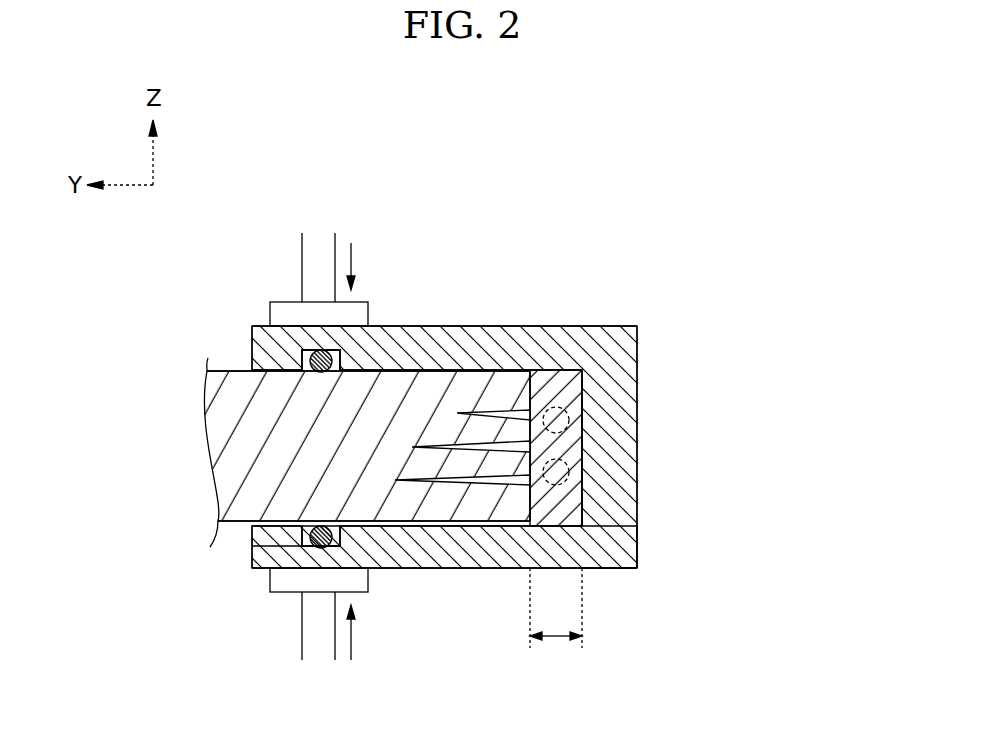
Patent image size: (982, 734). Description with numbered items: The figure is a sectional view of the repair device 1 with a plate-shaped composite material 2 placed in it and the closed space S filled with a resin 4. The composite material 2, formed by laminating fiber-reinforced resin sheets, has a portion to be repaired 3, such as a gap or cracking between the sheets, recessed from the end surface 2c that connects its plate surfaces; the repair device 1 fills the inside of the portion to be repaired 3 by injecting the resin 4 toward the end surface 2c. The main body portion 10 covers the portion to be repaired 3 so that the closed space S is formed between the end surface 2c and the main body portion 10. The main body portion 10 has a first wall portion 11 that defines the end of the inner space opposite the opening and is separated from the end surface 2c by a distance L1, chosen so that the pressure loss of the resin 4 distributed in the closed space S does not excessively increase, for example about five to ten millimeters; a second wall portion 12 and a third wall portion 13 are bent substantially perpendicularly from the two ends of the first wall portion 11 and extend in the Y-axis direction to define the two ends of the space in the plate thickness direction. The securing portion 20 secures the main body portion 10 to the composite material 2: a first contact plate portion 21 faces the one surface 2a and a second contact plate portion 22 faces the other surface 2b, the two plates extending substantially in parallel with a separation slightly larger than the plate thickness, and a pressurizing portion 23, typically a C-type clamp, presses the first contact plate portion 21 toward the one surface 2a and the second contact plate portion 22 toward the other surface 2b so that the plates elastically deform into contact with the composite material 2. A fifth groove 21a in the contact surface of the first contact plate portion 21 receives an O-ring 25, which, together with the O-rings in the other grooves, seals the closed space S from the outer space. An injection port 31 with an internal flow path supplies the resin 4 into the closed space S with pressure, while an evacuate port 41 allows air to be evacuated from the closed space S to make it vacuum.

The repair device 1 is at (600, 184).
The main body portion 10 is at (645, 288).
The first wall portion 11 is at (632, 523).
The second wall portion 12 is at (608, 335).
The third wall portion 13 is at (601, 566).
The securing portion 20 is at (393, 243).
The first contact plate portion 21 is at (456, 335).
The fifth groove 21a is at (300, 352).
The second contact plate portion 22 is at (447, 560).
The pressurizing portion 23 is at (310, 260).
The O-ring 25 is at (314, 366).
The composite material 2 is at (232, 448).
The one surface 2a is at (409, 369).
The other surface 2b is at (402, 522).
The end surface 2c is at (546, 383).
The portion to be repaired 3 is at (480, 446).
The resin 4 is at (582, 386).
The injection port 31 is at (571, 426).
The evacuate port 41 is at (571, 480).
The closed space S is at (582, 453).
The distance L1 is at (556, 608).